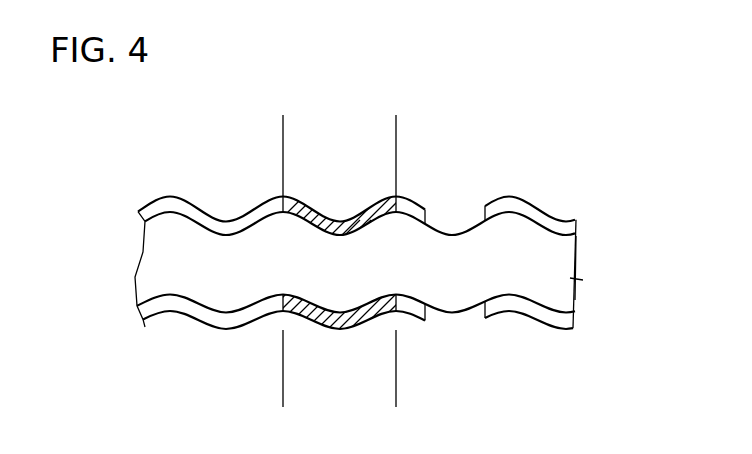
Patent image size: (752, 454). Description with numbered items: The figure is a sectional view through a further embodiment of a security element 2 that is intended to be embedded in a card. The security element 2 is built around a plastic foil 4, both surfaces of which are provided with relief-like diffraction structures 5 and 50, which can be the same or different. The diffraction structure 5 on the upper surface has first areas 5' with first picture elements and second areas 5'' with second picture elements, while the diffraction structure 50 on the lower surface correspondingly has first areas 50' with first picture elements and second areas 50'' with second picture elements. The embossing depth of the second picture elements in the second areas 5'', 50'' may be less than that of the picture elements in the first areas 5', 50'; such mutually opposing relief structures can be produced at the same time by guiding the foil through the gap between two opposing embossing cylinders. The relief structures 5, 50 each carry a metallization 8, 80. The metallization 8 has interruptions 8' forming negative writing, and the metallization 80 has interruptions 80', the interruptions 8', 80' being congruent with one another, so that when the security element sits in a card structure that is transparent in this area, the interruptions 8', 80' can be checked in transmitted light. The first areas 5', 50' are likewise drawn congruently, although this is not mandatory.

The security element 2 is at (541, 109).
The diffraction structure 5 is at (396, 197).
The metallization 8 is at (380, 208).
The interruptions (negative writing) 8' is at (458, 185).
The plastic foil 4 is at (583, 280).
The diffraction structure 50 is at (404, 341).
The metallization 80 is at (388, 330).
The interruptions (negative writing) 80' is at (458, 348).
The first areas 5' is at (355, 116).
The second areas 5'' is at (339, 116).
The first areas 50' is at (357, 382).
The second areas 50'' is at (339, 382).